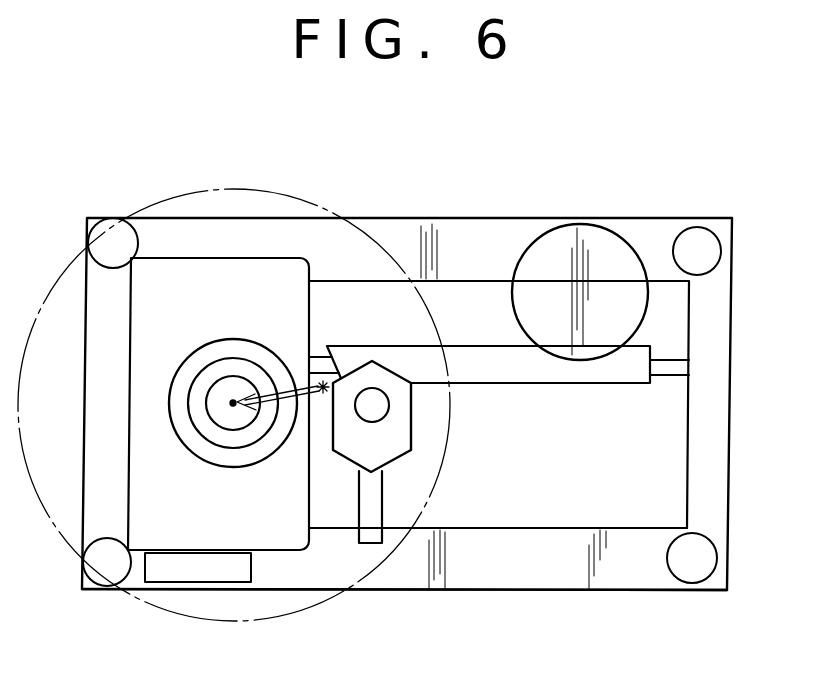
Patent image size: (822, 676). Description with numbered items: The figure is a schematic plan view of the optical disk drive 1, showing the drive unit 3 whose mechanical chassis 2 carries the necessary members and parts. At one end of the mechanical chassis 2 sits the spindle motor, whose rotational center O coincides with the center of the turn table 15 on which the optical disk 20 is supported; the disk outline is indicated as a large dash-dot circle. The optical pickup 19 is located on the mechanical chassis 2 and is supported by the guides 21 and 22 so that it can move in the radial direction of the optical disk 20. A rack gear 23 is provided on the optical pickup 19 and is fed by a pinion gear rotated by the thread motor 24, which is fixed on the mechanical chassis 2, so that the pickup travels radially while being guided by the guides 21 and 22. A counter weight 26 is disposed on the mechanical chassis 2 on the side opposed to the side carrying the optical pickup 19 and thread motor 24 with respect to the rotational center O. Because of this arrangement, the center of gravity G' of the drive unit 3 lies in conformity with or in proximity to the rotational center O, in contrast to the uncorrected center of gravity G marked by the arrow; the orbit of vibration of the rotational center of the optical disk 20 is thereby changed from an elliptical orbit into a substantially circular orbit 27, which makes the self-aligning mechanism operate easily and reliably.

The optical disk drive 1 is at (397, 192).
The mechanical chassis 2 is at (652, 237).
The drive unit 3 is at (529, 580).
The turn table 15 is at (256, 352).
The optical pickup 19 is at (413, 424).
The optical disk 20 is at (197, 190).
The guide 21 is at (672, 357).
The guide 22 is at (569, 545).
The rack gear 23 is at (495, 347).
The thread motor 24 is at (583, 228).
The counter weight 26 is at (192, 572).
The substantially circular orbit 27 is at (208, 422).
The rotational center O is at (231, 402).
The centre of gravity G is at (290, 441).
The center of gravity G' is at (218, 461).